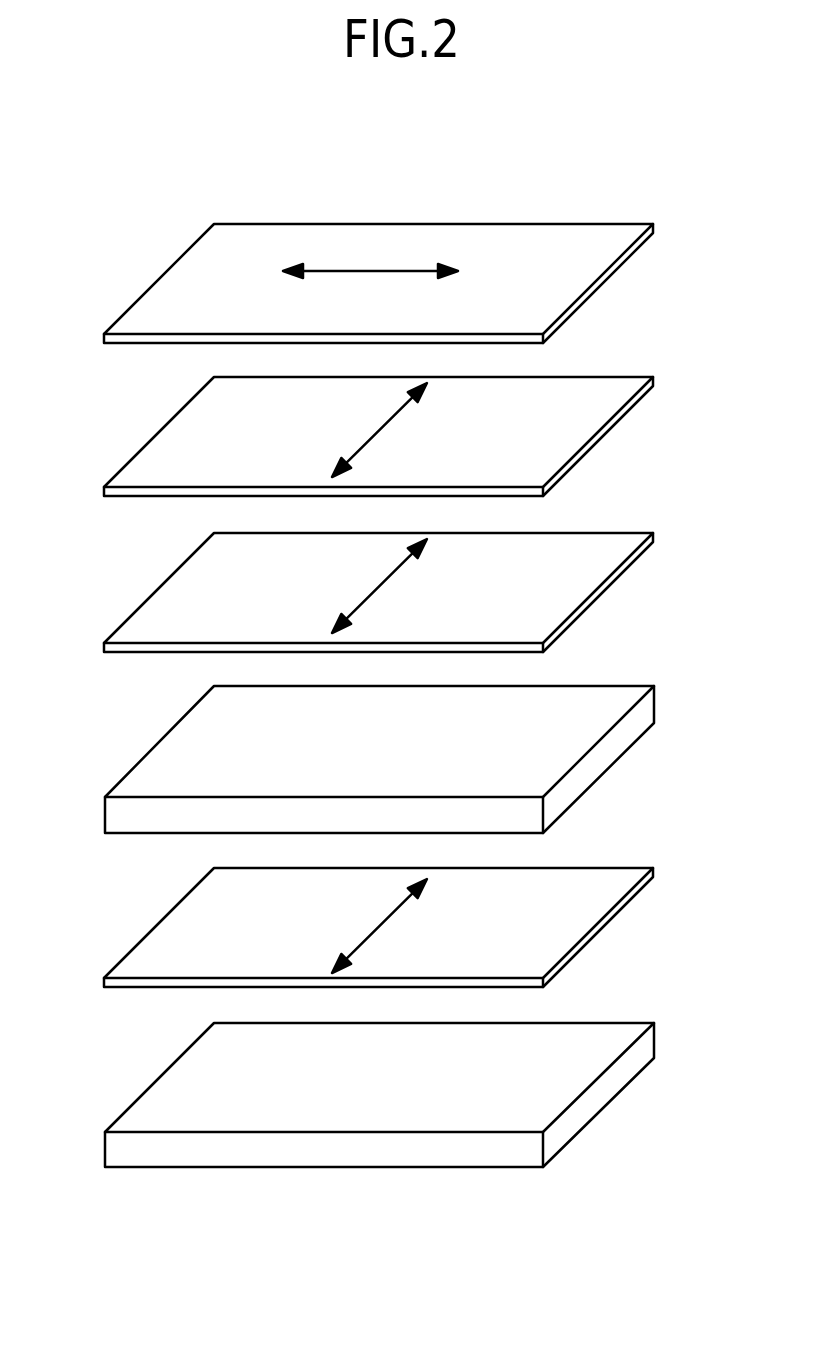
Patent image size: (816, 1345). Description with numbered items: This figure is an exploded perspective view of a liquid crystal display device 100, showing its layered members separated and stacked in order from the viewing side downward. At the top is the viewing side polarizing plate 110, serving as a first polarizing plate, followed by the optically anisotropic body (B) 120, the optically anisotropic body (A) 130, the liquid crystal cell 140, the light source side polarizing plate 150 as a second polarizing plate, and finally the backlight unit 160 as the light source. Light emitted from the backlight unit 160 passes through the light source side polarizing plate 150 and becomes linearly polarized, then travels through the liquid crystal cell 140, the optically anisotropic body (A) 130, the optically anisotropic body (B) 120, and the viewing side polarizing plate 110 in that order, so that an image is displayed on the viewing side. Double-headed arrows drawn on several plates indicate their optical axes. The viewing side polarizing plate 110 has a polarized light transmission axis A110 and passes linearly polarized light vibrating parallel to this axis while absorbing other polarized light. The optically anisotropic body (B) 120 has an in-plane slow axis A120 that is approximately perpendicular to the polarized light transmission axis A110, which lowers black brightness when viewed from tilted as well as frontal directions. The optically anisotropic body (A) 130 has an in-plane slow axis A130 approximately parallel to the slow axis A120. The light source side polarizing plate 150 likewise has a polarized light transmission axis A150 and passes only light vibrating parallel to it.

The liquid crystal display device 100 is at (566, 151).
The viewing side polarizing plate 110 is at (399, 281).
The optically anisotropic body (B) 120 is at (399, 435).
The optically anisotropic body (A) 130 is at (399, 590).
The liquid crystal cell 140 is at (656, 703).
The light source side polarizing plate 150 is at (399, 925).
The backlight unit 160 is at (656, 1033).
The polarized light transmission axis A110 is at (263, 273).
The slow axis A120 is at (250, 430).
The slow axis A130 is at (250, 586).
The polarized light transmission axis A150 is at (250, 926).